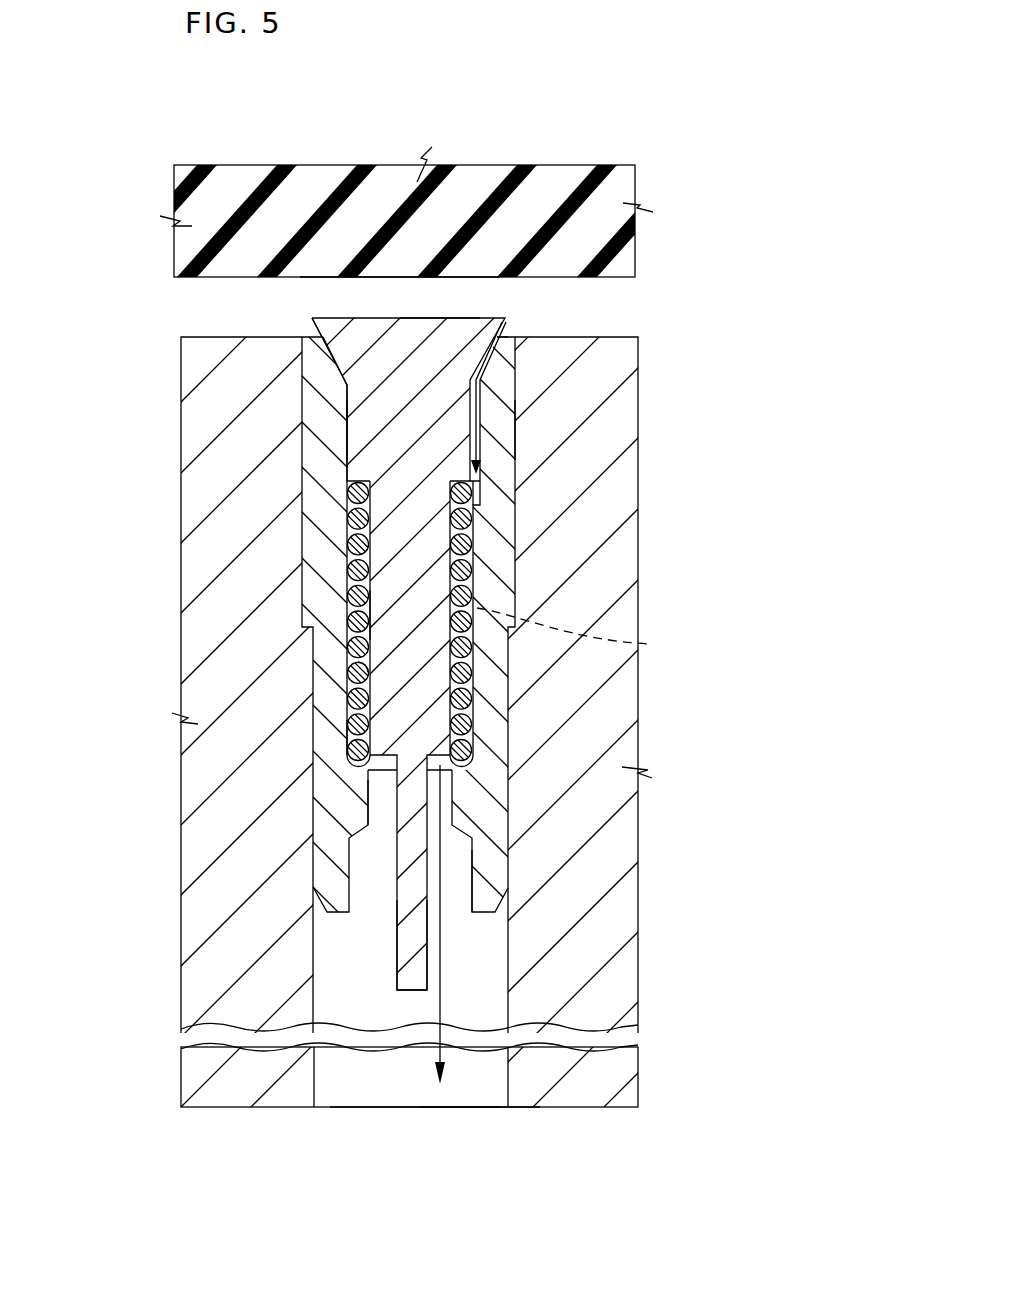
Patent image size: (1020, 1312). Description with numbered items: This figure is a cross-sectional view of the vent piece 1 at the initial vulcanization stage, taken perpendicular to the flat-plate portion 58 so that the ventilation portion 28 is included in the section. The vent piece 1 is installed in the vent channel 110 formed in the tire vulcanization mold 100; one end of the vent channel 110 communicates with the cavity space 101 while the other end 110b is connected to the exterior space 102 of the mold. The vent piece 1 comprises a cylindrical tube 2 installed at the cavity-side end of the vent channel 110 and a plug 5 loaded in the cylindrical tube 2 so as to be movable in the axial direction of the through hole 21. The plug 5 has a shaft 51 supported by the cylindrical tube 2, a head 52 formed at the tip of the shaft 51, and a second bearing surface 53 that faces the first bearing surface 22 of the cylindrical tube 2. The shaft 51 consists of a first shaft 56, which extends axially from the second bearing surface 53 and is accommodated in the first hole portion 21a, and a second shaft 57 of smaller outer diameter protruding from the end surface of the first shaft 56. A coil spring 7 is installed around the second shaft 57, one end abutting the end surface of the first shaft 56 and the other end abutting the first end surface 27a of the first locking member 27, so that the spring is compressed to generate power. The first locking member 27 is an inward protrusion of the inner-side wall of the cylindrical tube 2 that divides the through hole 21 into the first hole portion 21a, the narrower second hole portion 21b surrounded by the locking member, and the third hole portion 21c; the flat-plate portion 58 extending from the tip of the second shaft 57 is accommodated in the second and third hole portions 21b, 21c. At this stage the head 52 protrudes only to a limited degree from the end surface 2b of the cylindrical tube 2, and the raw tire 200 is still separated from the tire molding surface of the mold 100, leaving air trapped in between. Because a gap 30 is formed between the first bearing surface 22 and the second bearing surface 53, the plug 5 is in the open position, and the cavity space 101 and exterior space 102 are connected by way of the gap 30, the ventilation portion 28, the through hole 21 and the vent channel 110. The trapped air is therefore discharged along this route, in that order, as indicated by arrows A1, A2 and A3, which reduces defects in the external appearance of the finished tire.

The raw tire 200 is at (320, 193).
The cavity space 101 is at (570, 298).
The exterior space 102 is at (479, 1116).
The tire vulcanization mold 100 is at (608, 570).
The vent channel 110 is at (338, 1004).
The other end of vent channel 110b is at (362, 1087).
The vent piece 1 is at (522, 429).
The cylindrical tube 2 is at (502, 658).
The end surface of cylindrical tube 2b is at (320, 347).
The plug 5 is at (393, 615).
The coil spring 7 is at (477, 595).
The through hole 21 is at (476, 688).
The first hole portion 21a is at (478, 512).
The second hole portion 21b is at (380, 798).
The third hole portion 21c is at (455, 877).
The first bearing surface 22 is at (365, 325).
The first locking member 27 is at (463, 795).
The first end surface of first locking member 27a is at (347, 740).
The ventilation portion 28 is at (477, 430).
The gap 30 is at (495, 362).
The shaft 51 is at (393, 565).
The head 52 is at (443, 318).
The second bearing surface 53 is at (347, 384).
The first shaft 56 is at (375, 427).
The second shaft 57 is at (390, 675).
The flat-plate portion 58 is at (405, 930).
The arrow A1 is at (507, 325).
The arrow A2 is at (580, 633).
The arrow A3 is at (443, 988).